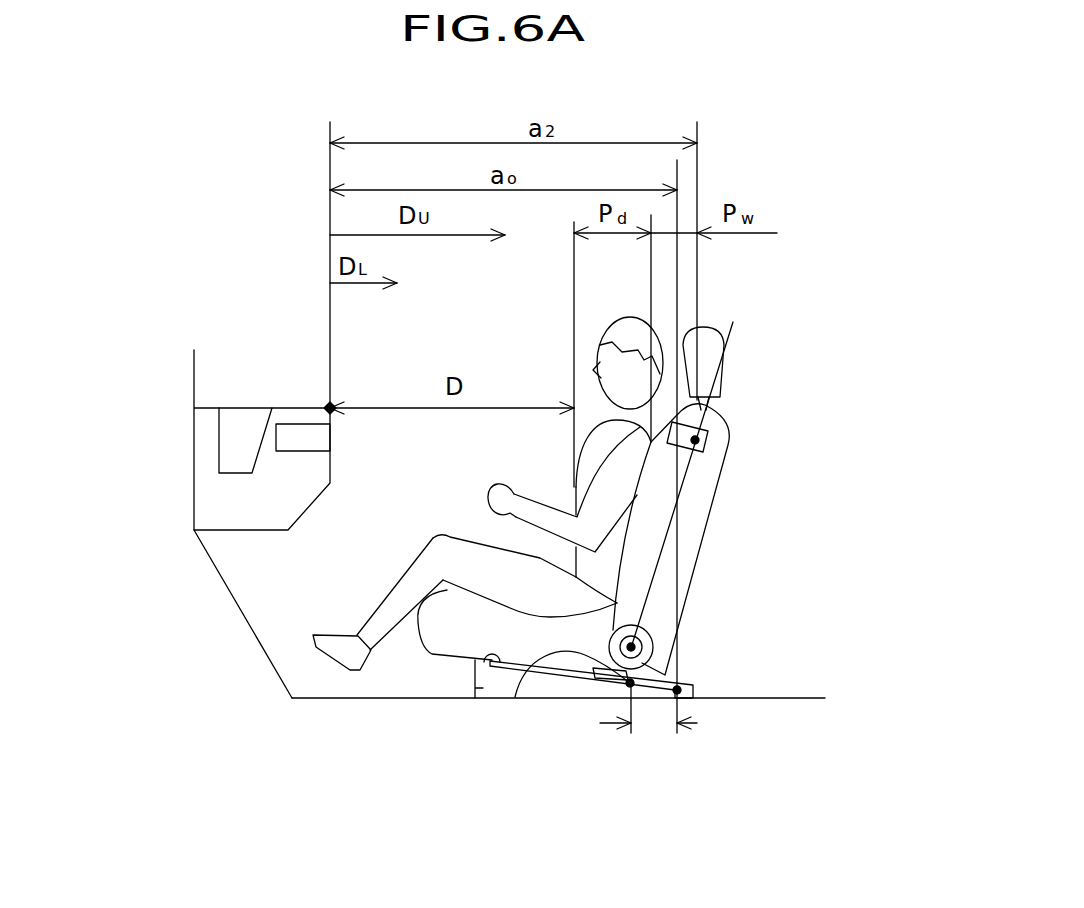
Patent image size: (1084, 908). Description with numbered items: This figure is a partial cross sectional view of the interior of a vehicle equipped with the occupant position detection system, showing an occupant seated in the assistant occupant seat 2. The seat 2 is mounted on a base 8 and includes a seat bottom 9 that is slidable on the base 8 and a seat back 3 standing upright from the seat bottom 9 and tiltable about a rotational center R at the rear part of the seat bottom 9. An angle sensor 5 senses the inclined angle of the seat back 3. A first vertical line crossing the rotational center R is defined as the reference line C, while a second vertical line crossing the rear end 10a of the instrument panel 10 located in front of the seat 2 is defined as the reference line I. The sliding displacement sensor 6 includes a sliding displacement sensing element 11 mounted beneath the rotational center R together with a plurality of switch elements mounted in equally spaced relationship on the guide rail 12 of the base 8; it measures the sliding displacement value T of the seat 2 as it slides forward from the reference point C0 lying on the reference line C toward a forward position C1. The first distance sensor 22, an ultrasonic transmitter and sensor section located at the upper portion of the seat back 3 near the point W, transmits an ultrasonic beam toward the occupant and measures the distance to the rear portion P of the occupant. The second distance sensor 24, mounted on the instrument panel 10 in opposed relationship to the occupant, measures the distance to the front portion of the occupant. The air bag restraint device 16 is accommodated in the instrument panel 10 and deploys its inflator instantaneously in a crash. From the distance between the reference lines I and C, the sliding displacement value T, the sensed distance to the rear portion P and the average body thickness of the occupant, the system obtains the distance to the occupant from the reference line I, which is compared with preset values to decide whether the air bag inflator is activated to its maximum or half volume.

The assistant occupant seat 2 is at (629, 560).
The seat back 3 is at (665, 588).
The angle sensor 5 is at (652, 625).
The sliding displacement sensor 6 is at (583, 686).
The base 8 is at (470, 688).
The seat bottom 9 is at (460, 642).
The instrument panel 10 is at (308, 470).
The rear end of instrument panel 10a is at (330, 481).
The sliding displacement sensing element 11 is at (518, 688).
The guide rail 12 is at (482, 663).
The air bag restraint device 16 is at (238, 422).
The second distance sensor 24 is at (305, 433).
The first distance sensor 22 is at (710, 416).
The sensor reference point W is at (700, 441).
The rear portion of the occupant P is at (673, 396).
The rotational center R is at (654, 656).
The reference line C is at (677, 172).
The reference line I is at (330, 173).
The sliding displacement value T is at (648, 723).
The front position C1 is at (627, 692).
The reference point C0 is at (677, 691).